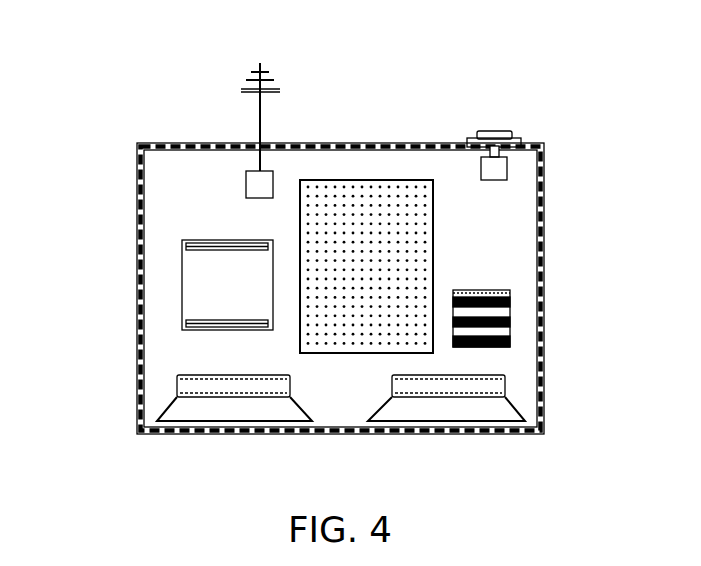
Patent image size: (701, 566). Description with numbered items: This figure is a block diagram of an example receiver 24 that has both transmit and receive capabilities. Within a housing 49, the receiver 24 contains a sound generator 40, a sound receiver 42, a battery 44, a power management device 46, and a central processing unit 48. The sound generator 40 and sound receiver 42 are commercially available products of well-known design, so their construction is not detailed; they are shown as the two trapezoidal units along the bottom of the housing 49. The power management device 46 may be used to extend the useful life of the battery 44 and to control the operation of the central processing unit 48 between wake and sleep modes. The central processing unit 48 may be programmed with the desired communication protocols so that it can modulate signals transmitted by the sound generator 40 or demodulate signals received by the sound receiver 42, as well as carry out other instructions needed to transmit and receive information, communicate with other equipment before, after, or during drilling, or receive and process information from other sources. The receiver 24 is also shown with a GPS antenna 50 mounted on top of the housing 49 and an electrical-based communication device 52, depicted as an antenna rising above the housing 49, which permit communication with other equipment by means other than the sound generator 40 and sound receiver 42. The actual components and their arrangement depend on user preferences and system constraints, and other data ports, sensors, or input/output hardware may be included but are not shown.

The receiver 24 is at (582, 150).
The sound generator 40 is at (198, 407).
The sound receiver 42 is at (438, 402).
The battery 44 is at (348, 222).
The power management device 46 is at (472, 313).
The central processing unit 48 is at (238, 263).
The housing 49 is at (137, 143).
The GPS antenna 50 is at (484, 133).
The electrical-based communication device 52 is at (254, 106).